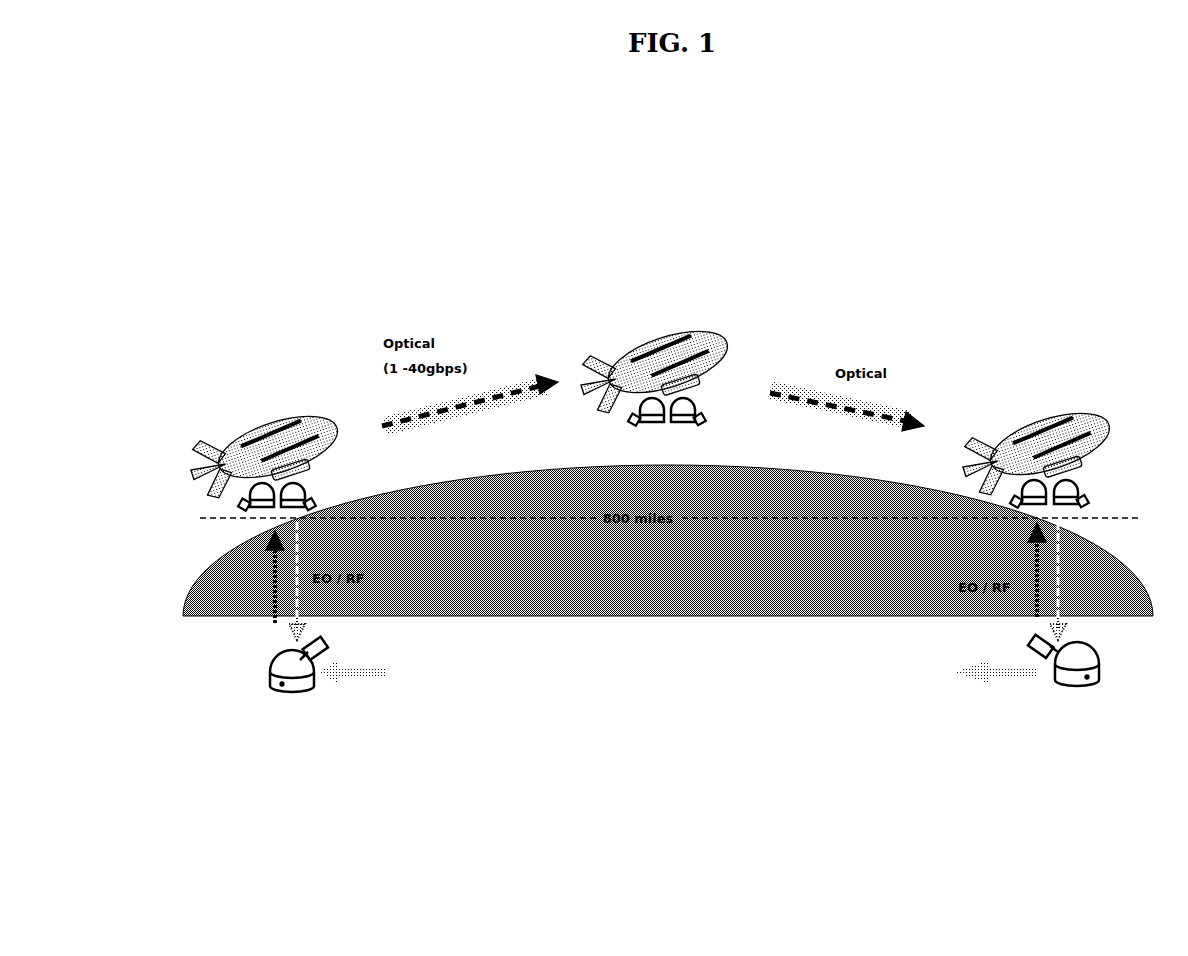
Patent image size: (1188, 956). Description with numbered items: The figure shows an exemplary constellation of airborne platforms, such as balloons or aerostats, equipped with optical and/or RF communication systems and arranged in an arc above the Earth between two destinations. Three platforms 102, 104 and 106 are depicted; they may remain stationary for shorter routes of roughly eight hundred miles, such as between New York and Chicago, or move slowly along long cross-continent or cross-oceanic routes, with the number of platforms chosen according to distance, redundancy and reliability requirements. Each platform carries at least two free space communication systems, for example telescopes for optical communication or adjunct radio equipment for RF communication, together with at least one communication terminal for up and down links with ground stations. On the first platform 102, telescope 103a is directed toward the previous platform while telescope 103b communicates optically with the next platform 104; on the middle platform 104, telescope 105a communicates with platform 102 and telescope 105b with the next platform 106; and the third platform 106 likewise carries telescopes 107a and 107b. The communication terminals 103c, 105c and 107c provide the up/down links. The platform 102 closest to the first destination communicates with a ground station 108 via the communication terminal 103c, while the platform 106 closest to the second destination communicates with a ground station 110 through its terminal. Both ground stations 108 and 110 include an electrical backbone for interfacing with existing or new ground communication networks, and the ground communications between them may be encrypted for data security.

The platform 102 is at (273, 457).
The telescope 103a is at (245, 507).
The telescope 103b is at (308, 493).
The communication terminal 103c is at (303, 476).
The platform 104 is at (664, 361).
The telescope 105a is at (634, 420).
The telescope 105b is at (702, 423).
The communication terminal 105c is at (693, 381).
The platform 106 is at (1045, 449).
The telescope 107a is at (1014, 504).
The telescope 107b is at (1078, 501).
The communication terminal 107c is at (1080, 459).
The ground station 108 is at (412, 687).
The ground station 110 is at (1055, 698).